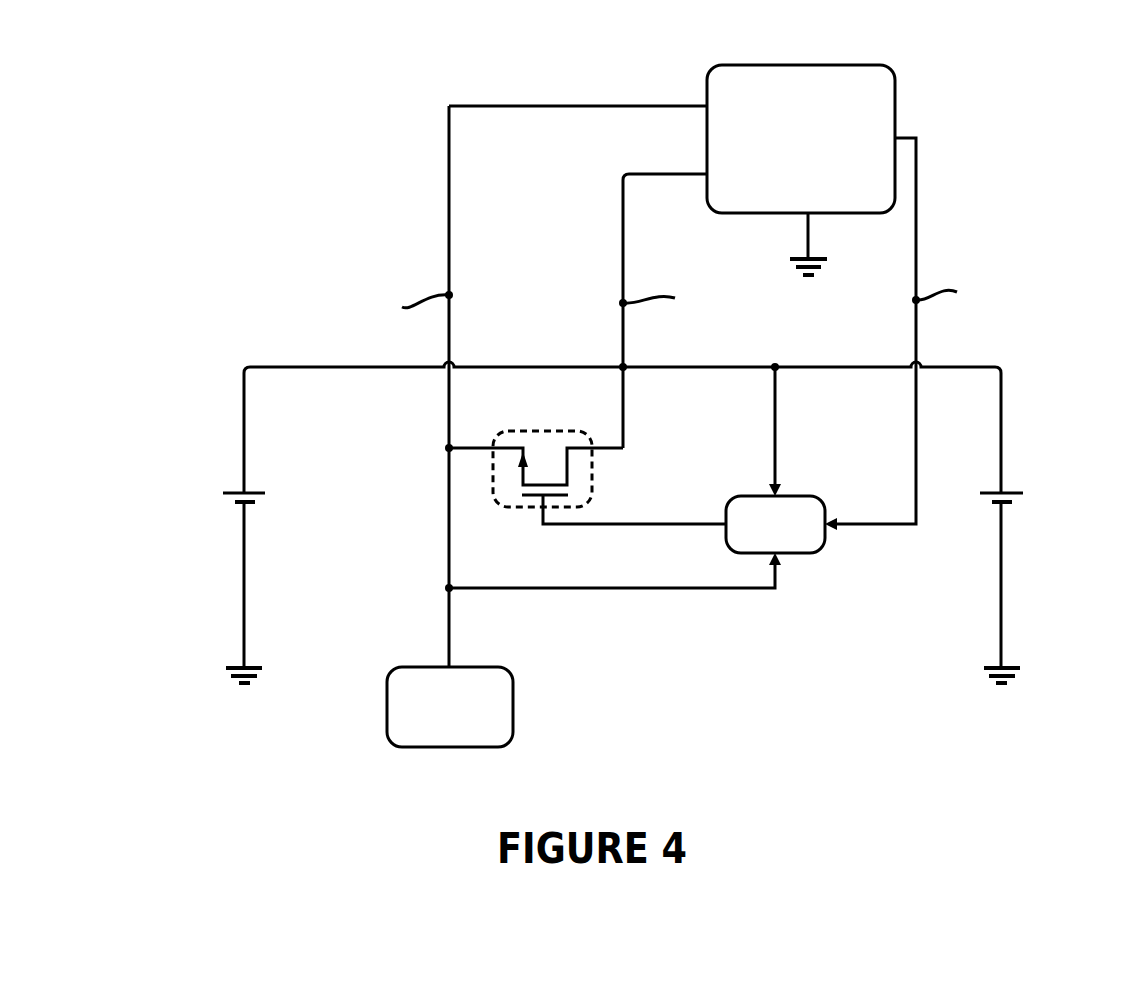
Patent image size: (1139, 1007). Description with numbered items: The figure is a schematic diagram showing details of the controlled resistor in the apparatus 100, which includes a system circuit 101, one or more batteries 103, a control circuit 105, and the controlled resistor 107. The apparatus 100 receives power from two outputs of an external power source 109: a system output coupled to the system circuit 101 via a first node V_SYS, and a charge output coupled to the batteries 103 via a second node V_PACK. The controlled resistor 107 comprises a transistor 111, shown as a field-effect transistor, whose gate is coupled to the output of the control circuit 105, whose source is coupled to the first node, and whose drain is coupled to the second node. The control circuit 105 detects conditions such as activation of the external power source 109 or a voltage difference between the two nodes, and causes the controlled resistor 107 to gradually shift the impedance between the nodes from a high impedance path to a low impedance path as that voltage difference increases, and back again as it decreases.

The apparatus 100 is at (225, 172).
The system circuit 101 is at (410, 667).
The batteries 103 is at (619, 529).
The control circuit 105 is at (748, 496).
The controlled resistor 107 is at (556, 442).
The external power source 109 is at (709, 78).
The transistor 111 is at (567, 477).